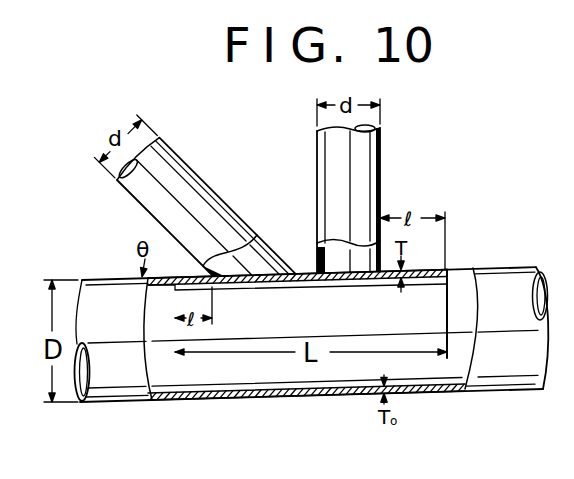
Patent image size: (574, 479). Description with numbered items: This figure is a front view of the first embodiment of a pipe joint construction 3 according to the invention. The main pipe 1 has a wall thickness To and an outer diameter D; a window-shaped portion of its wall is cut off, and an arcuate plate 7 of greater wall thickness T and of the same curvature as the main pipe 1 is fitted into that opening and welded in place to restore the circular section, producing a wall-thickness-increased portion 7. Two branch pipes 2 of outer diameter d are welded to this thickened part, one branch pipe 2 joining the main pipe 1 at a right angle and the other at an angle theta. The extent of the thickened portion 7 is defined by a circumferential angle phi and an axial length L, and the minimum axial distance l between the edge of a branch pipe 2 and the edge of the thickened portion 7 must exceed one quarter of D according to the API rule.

The main pipe 1 is at (307, 397).
The branch pipe 2 is at (317, 172).
The pipe joint 3 is at (436, 141).
The arcuate plate 7 is at (426, 268).